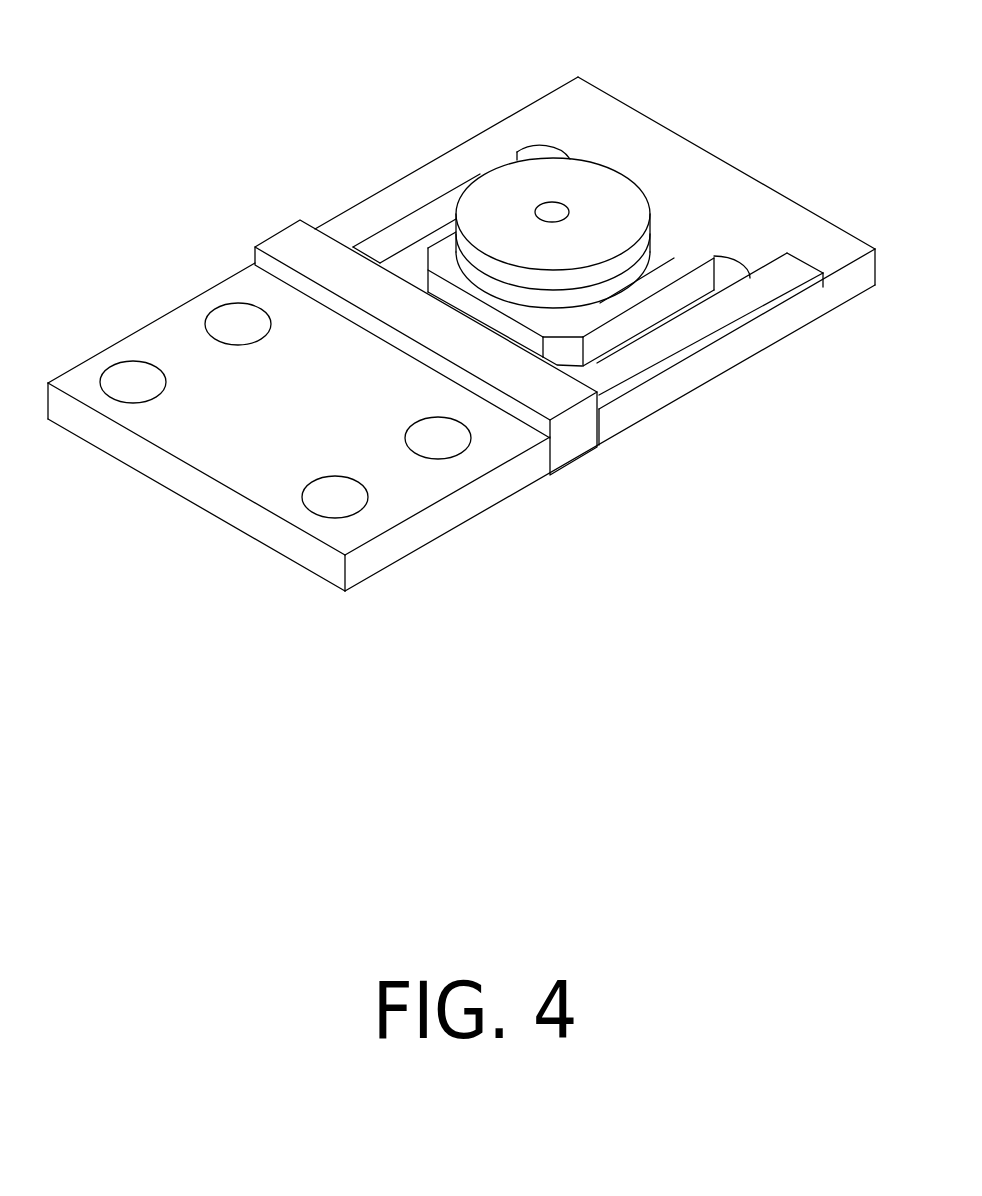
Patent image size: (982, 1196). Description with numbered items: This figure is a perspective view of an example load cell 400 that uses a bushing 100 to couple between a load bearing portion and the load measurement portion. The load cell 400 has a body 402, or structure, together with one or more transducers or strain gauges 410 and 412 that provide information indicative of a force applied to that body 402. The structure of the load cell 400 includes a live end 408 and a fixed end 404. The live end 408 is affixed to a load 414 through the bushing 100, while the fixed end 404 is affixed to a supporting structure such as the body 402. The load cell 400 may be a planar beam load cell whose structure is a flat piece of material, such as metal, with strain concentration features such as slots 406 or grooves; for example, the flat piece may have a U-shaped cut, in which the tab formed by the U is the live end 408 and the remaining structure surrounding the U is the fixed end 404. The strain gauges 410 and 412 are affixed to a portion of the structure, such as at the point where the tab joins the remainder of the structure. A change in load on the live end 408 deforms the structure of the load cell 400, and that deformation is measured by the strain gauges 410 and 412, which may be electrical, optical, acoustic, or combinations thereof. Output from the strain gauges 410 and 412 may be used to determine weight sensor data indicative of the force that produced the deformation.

The load cell 400 is at (150, 89).
The body 402 is at (167, 345).
The fixed end 404 is at (645, 143).
The slots 406 is at (408, 233).
The live end 408 is at (672, 270).
The strain gauge 410 is at (777, 308).
The strain gauge 412 is at (288, 245).
The load 414 is at (503, 183).
The bushing 100 is at (573, 297).